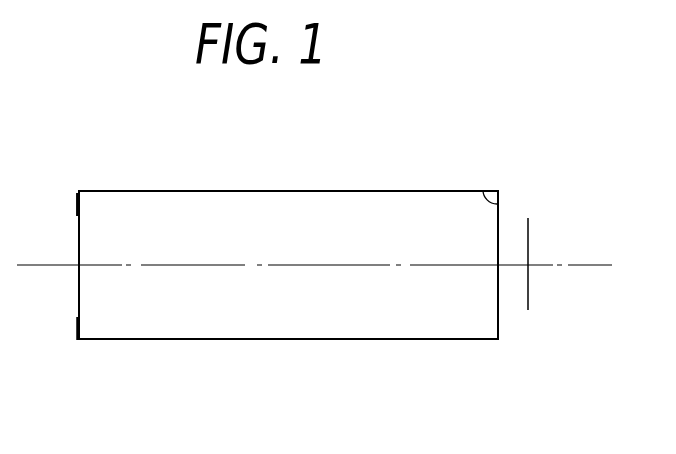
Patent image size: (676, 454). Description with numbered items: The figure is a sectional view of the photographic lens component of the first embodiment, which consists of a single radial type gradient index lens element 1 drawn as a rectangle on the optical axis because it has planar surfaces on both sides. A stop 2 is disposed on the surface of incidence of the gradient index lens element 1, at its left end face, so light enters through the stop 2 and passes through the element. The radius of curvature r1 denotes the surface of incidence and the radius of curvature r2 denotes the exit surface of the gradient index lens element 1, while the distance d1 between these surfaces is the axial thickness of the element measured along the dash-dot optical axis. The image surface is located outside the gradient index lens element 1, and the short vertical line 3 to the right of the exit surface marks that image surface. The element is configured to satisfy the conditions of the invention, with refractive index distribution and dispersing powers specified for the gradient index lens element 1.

The radial type gradient index lens element 1 is at (216, 340).
The stop 2 is at (78, 329).
The reference plane 3 is at (528, 296).
The radius of curvature r1 is at (77, 207).
The radius of curvature r2 is at (483, 190).
The distance between surfaces d1 is at (345, 267).